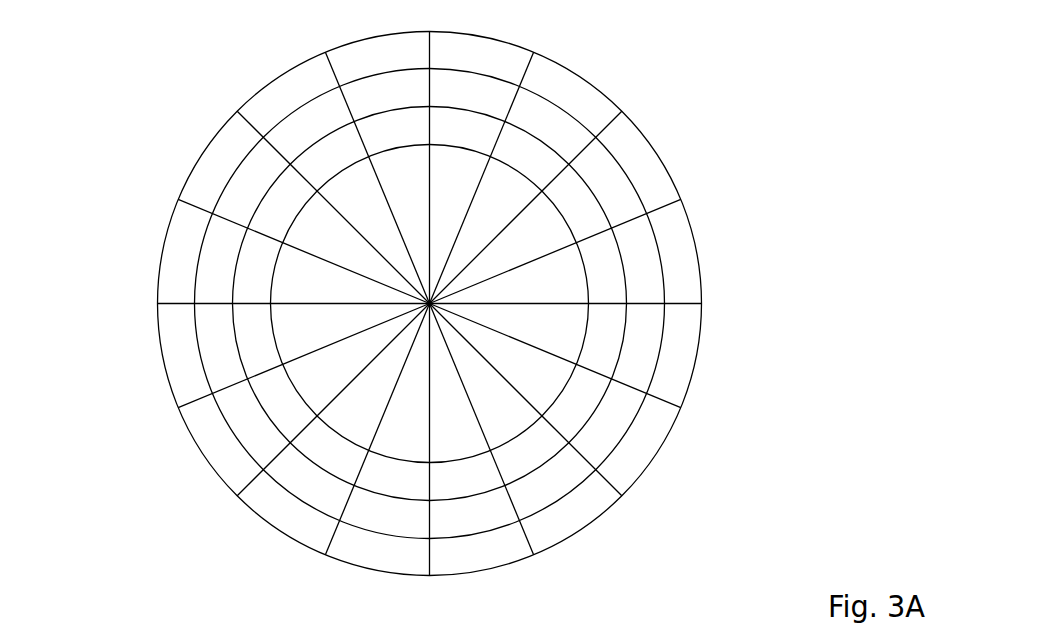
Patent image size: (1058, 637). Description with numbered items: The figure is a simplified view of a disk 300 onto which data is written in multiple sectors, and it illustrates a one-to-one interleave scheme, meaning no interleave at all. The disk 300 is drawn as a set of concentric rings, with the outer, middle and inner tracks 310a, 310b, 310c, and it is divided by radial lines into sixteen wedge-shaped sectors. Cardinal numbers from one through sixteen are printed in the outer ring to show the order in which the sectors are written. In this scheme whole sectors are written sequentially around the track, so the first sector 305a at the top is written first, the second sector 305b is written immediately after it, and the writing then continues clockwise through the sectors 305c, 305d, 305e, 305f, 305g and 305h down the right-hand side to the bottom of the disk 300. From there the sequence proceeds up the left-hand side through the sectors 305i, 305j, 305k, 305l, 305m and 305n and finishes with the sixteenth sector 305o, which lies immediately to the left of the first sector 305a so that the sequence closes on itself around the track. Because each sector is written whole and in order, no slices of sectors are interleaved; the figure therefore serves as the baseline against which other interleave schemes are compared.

The disk 300 is at (113, 533).
The outer ring 310a is at (212, 408).
The middle ring 310b is at (228, 338).
The inner ring 310c is at (257, 278).
The sector 1 305a is at (500, 38).
The sector 2 305b is at (583, 73).
The sector c 305c is at (652, 135).
The sector d 305d is at (695, 227).
The sector e 305e is at (702, 345).
The sector f 305f is at (668, 442).
The sector g 305g is at (595, 523).
The sector h 305h is at (497, 568).
The sector i 305i is at (357, 577).
The sector j 305j is at (277, 533).
The sector k 305k is at (203, 463).
The sector l 305l is at (160, 247).
The sector m 305m is at (203, 145).
The sector n 305n is at (280, 75).
The sector o 305o is at (370, 35).